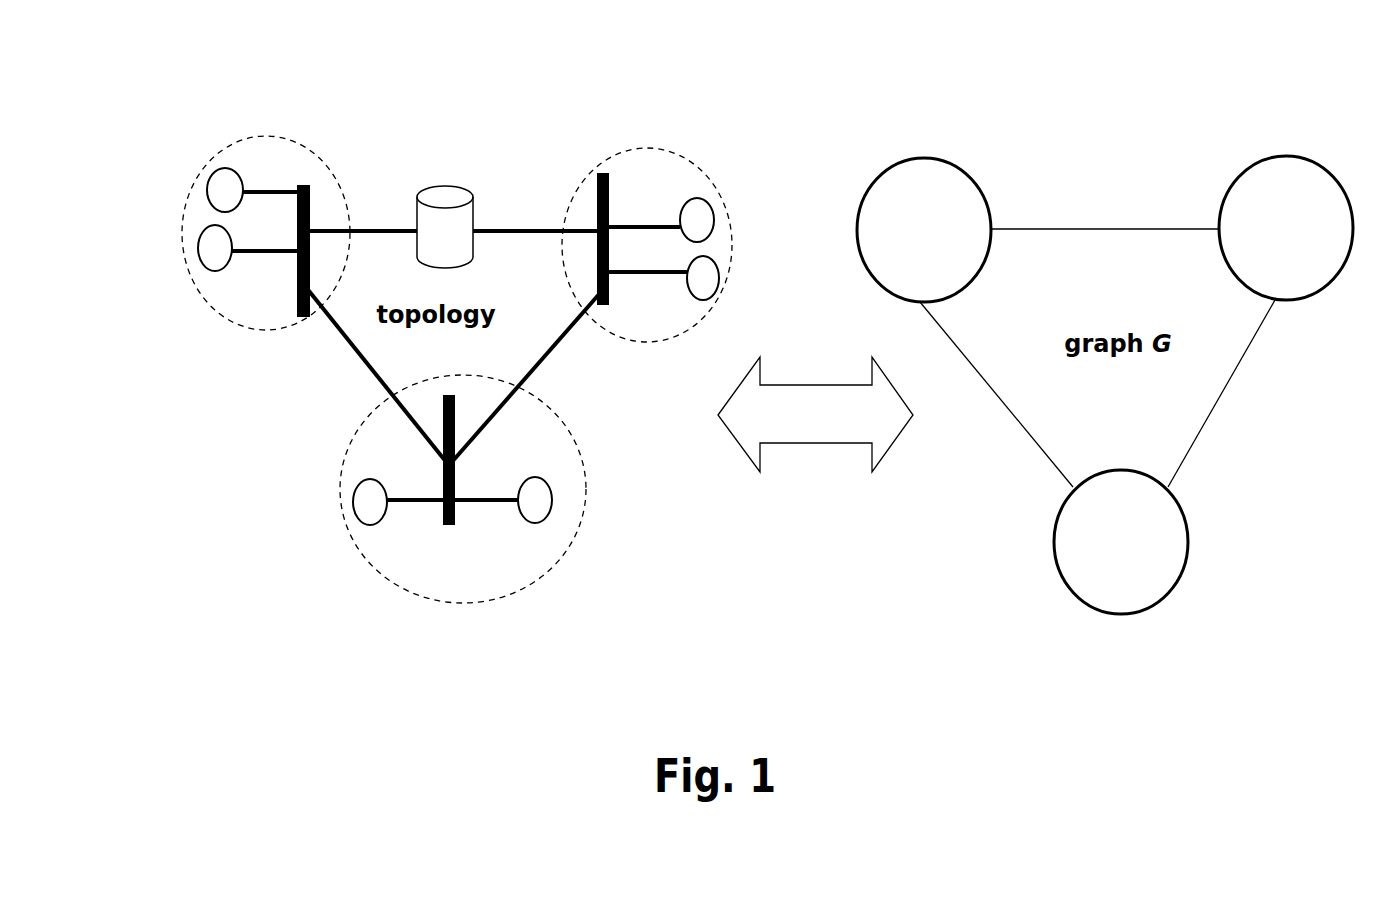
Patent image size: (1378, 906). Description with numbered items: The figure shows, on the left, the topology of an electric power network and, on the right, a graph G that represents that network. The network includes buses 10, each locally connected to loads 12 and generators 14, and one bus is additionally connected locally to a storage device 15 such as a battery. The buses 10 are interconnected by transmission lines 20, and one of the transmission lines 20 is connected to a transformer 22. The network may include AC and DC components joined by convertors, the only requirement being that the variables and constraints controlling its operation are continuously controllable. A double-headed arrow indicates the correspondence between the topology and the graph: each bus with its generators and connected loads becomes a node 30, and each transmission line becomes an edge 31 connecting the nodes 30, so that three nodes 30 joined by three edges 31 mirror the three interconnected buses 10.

The bus 10 is at (306, 197).
The load 12 is at (207, 192).
The generator 14 is at (210, 277).
The storage device 15 is at (718, 268).
The transmission line 20 is at (437, 452).
The transformer 22 is at (452, 187).
The node 30 is at (915, 158).
The edge 31 is at (1182, 228).